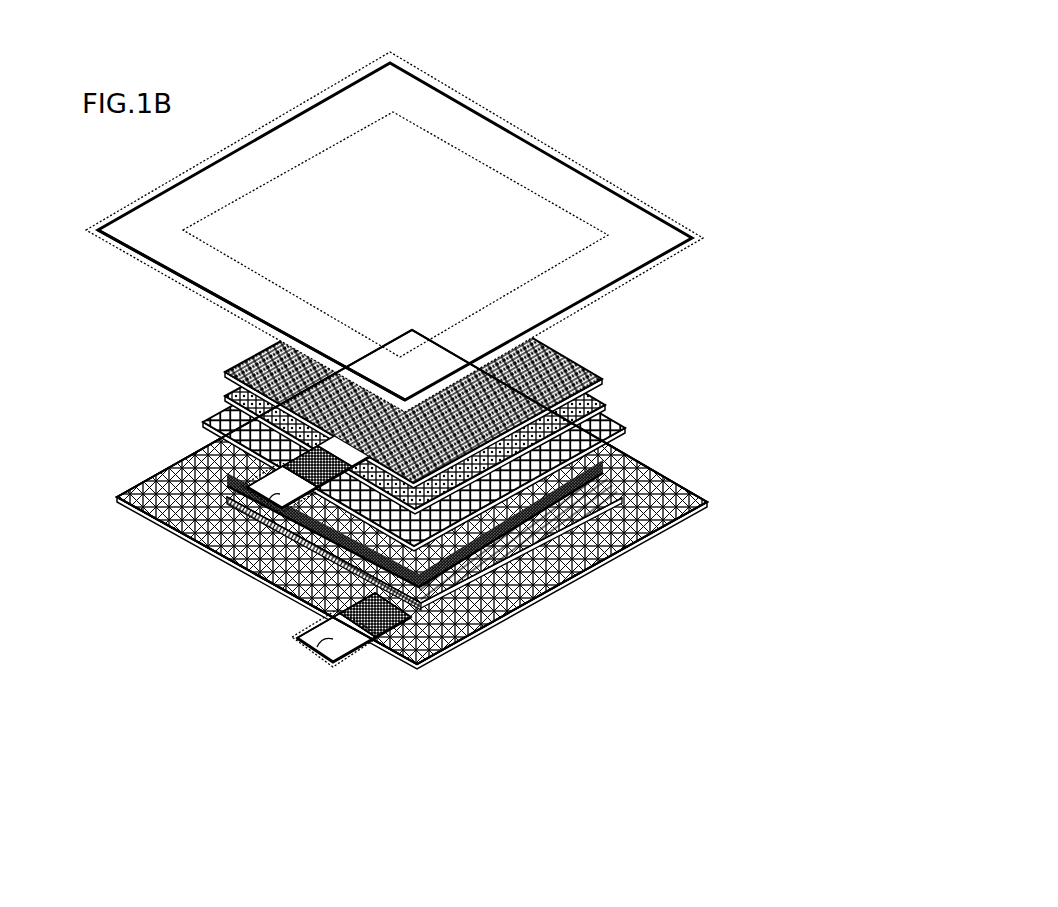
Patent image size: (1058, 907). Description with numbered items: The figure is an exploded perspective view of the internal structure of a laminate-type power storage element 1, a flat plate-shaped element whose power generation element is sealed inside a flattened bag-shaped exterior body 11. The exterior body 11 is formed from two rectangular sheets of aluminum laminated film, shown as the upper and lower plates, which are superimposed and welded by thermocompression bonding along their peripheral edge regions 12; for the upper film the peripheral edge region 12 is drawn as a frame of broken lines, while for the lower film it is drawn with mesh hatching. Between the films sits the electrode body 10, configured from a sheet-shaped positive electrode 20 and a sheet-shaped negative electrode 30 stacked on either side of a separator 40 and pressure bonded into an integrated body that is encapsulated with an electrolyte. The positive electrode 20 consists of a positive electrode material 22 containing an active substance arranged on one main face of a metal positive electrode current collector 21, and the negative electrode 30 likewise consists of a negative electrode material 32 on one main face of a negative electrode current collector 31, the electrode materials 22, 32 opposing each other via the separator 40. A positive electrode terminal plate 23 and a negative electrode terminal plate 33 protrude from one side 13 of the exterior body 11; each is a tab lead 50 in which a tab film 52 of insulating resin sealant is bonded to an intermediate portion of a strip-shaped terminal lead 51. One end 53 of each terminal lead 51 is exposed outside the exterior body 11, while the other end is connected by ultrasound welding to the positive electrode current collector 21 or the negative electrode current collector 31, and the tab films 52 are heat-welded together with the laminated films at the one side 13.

The laminate-type power storage element 1 is at (586, 101).
The electrode body 10 is at (852, 323).
The exterior body 11 is at (643, 240).
The peripheral edge region 12 is at (575, 188).
The one side 13 is at (229, 311).
The positive electrode 20 is at (805, 385).
The positive electrode current collector 21 is at (621, 497).
The positive electrode material 22 is at (612, 468).
The positive electrode terminal plate 23 is at (337, 755).
The negative electrode 30 is at (796, 306).
The negative electrode current collector 31 is at (567, 371).
The negative electrode material 32 is at (597, 393).
The negative electrode terminal plate 33 is at (235, 621).
The separator 40 is at (605, 428).
The tab lead 50 is at (249, 611).
The terminal lead 51 is at (262, 500).
The tab film 52 is at (308, 468).
The one end 53 is at (243, 480).